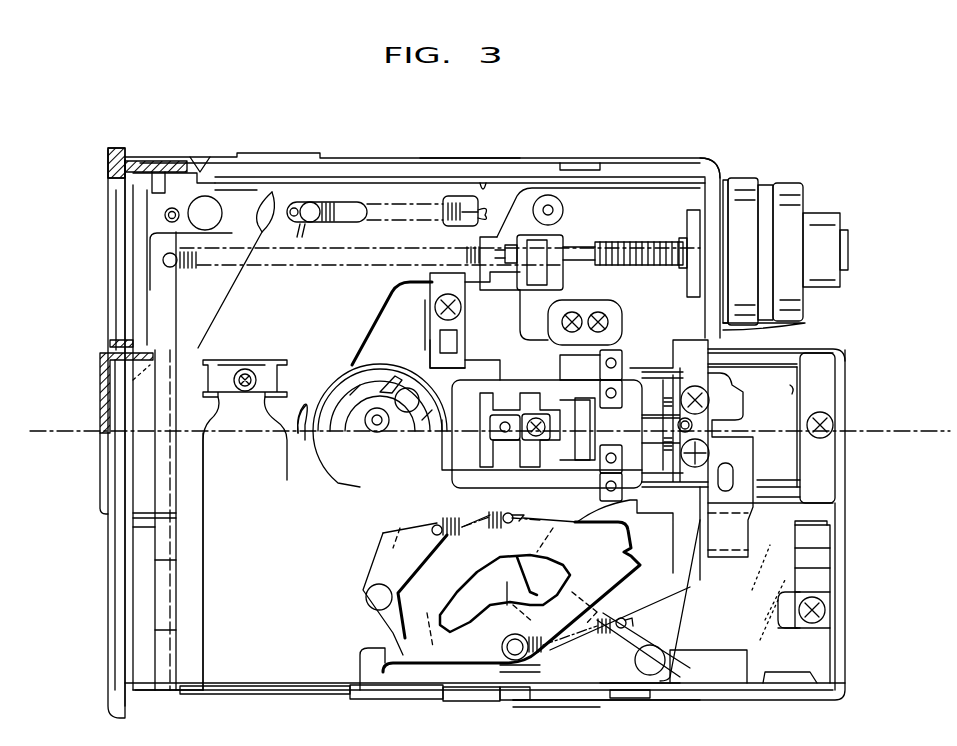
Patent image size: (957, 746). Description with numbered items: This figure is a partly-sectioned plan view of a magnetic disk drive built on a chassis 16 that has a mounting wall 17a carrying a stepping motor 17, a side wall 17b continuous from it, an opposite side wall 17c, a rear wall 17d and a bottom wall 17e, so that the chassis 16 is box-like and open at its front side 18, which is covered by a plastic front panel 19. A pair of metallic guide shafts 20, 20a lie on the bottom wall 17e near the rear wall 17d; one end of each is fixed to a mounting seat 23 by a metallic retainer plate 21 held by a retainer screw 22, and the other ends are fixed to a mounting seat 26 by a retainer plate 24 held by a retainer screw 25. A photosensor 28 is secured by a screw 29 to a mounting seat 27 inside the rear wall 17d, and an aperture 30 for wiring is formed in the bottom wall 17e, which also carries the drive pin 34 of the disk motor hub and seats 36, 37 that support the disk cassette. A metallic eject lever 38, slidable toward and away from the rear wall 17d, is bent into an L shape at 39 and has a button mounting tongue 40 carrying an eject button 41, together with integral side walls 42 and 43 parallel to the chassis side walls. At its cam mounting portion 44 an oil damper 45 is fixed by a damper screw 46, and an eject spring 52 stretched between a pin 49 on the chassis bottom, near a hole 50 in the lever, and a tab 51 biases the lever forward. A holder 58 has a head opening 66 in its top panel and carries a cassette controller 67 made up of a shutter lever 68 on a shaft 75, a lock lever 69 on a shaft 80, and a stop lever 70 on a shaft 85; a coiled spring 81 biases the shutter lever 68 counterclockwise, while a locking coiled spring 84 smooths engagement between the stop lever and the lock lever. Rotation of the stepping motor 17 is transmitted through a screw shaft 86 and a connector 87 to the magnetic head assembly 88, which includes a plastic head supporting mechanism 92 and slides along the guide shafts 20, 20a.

The chassis 16 is at (728, 160).
The stepping motor 17 is at (798, 195).
The mounting wall 17a is at (733, 210).
The side wall 17b is at (462, 158).
The side wall 17c is at (672, 700).
The rear wall 17d is at (845, 620).
The bottom wall 17e is at (805, 655).
The open front side 18 is at (120, 209).
The front panel 19 is at (108, 163).
The guide shaft 20 is at (780, 352).
The guide shaft 20a is at (785, 490).
The retainer plate 21 is at (830, 366).
The retainer screw 22 is at (835, 425).
The mounting seat 23 is at (795, 390).
The retainer plate 24 is at (440, 322).
The retainer screw 25 is at (462, 308).
The mounting seat 26 is at (430, 340).
The mounting seat 27 is at (790, 628).
The photosensor 28 is at (820, 565).
The screw 29 is at (828, 605).
The aperture 30 is at (735, 665).
The drive pin 34 is at (405, 412).
The seat 36 is at (548, 197).
The seat 37 is at (205, 200).
The eject lever 38 is at (272, 192).
The L-shaped bend 39 is at (170, 400).
The button mounting tongue 40 is at (118, 386).
The eject button 41 is at (108, 362).
The side wall 42 is at (485, 188).
The side wall 43 is at (393, 677).
The cam mounting portion 44 is at (278, 360).
The oil damper 45 is at (290, 400).
The damper screw 46 is at (246, 375).
The pin 49 is at (312, 202).
The hole 50 is at (300, 200).
The tab 51 is at (495, 213).
The eject spring 52 is at (452, 195).
The holder 58 is at (738, 621).
The head opening 66 is at (455, 478).
The cassette controller 67 is at (543, 660).
The shutter lever 68 is at (625, 638).
The lock lever 69 is at (556, 526).
The stop lever 70 is at (390, 548).
The shaft 75 is at (642, 672).
The shaft 80 is at (503, 648).
The coiled spring 81 is at (568, 646).
The locking coiled spring 84 is at (458, 517).
The shaft 85 is at (368, 600).
The screw shaft 86 is at (633, 245).
The connector 87 is at (582, 241).
The magnetic head assembly 88 is at (630, 380).
The head supporting mechanism 92 is at (455, 447).